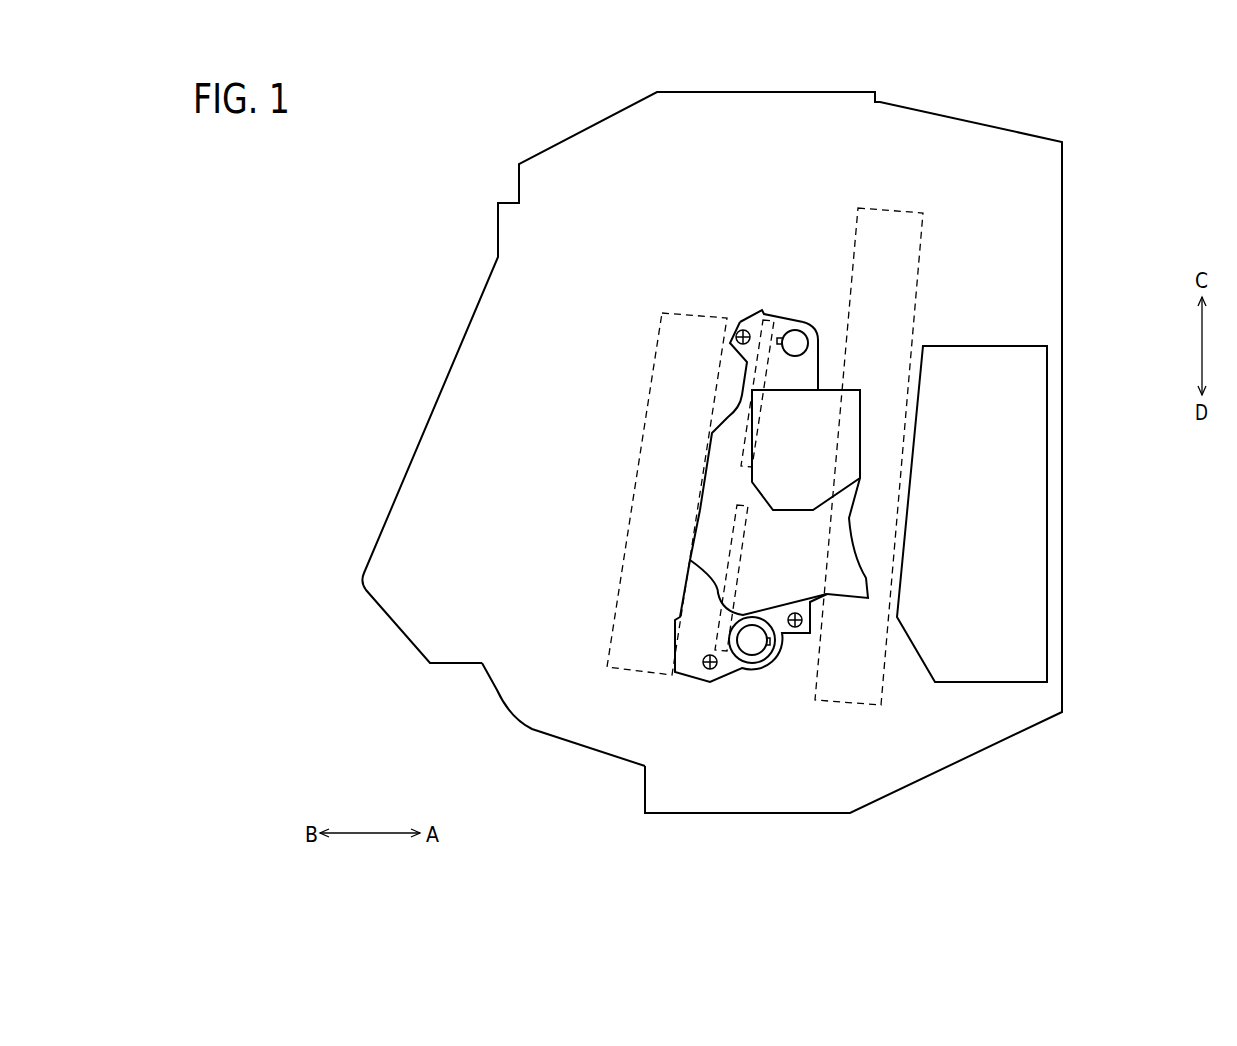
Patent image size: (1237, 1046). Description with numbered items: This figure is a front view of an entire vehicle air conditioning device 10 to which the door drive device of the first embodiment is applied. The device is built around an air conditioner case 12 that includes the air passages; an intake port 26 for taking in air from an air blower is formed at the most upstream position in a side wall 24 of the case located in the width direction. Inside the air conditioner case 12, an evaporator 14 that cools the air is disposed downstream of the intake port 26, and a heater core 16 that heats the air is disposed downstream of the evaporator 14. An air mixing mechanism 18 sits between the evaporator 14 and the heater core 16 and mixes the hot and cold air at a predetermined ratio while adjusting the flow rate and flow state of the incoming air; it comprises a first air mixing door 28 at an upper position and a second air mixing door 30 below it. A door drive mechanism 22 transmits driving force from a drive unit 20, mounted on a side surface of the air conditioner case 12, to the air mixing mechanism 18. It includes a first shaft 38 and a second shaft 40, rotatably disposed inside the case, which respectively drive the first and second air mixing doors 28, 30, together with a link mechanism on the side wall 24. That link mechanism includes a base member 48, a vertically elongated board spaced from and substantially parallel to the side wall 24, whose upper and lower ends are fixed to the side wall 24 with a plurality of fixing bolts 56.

The vehicle air conditioning device 10 is at (294, 207).
The air conditioner case 12 is at (437, 342).
The evaporator 14 is at (903, 258).
The heater core 16 is at (670, 405).
The air mixing mechanism 18 is at (713, 621).
The drive unit 20 is at (847, 448).
The door drive mechanism 22 is at (830, 370).
The side wall 24 is at (553, 705).
The intake port 26 is at (1018, 607).
The first air mixing door 28 is at (762, 308).
The second air mixing door 30 is at (738, 532).
The first shaft 38 is at (794, 345).
The second shaft 40 is at (753, 642).
The base member 48 is at (845, 572).
The fixing bolts 56 is at (737, 324).